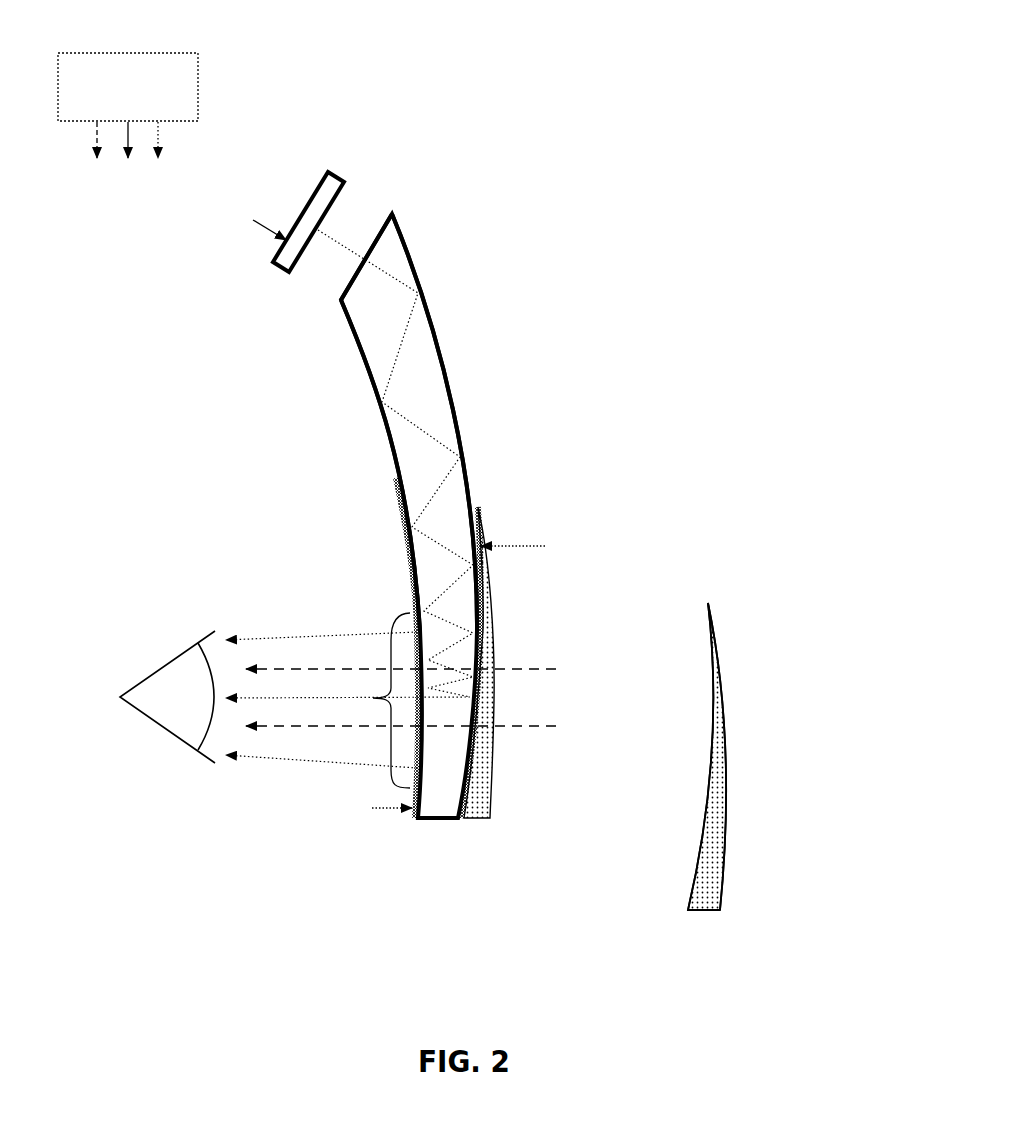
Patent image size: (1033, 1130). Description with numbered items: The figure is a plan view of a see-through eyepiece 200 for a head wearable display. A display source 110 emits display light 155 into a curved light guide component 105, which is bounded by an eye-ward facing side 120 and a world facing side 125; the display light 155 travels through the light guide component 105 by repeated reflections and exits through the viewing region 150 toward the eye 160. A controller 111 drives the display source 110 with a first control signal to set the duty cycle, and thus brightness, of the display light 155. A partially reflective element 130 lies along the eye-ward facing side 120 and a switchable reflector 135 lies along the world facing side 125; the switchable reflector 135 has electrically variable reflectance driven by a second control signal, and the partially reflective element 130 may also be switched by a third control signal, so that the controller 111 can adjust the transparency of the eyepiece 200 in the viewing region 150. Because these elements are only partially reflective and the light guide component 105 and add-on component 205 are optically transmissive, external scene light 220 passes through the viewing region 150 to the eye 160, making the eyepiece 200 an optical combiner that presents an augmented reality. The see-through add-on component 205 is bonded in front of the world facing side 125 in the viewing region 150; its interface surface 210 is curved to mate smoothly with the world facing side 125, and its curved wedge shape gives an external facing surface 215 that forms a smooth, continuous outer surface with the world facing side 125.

The controller 111 is at (114, 108).
The display source 110 is at (328, 173).
The see-through eyepiece 200 is at (654, 76).
The light guide component 105 is at (544, 301).
The display light 155 is at (343, 242).
The world facing side 125 is at (487, 409).
The eye-ward facing side 120 is at (357, 431).
The partially reflective element 130 is at (396, 480).
The switchable reflector 135 is at (478, 507).
The viewing region 150 is at (373, 698).
The eye 160 is at (188, 706).
The external scene light 220 is at (540, 668).
The add-on component 205 is at (473, 820).
The interface surface 210 is at (702, 840).
The external facing surface 215 is at (728, 810).